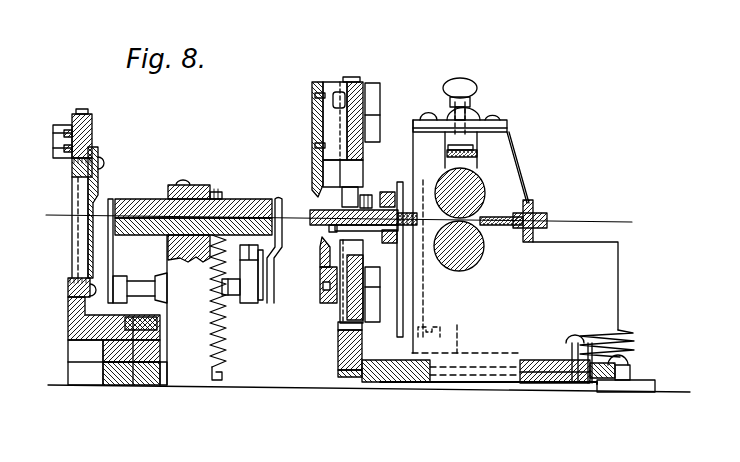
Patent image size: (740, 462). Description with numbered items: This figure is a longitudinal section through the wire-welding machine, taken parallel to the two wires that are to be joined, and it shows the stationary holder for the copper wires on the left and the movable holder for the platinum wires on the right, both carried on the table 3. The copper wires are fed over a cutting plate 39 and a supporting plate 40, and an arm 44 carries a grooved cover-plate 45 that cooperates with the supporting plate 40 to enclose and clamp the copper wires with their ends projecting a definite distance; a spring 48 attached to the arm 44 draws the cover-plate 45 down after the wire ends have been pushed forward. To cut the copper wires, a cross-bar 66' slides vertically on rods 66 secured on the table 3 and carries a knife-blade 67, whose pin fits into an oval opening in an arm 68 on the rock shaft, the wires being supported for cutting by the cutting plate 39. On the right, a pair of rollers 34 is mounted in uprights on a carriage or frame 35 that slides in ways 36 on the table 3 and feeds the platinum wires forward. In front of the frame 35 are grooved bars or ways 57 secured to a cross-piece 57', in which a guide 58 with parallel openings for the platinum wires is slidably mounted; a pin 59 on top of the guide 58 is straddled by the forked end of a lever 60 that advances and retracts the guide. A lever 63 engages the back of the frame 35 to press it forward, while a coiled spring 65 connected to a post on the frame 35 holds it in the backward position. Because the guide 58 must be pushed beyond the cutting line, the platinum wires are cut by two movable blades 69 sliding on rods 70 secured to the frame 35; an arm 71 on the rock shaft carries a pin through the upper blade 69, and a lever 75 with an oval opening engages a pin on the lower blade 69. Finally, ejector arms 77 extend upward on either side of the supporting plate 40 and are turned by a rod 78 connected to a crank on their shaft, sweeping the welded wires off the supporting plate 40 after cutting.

The table 3 is at (318, 386).
The pair of rollers 34 is at (484, 196).
The carriage or frame 35 is at (612, 270).
The ways 36 is at (497, 386).
The cutting plate 39 is at (75, 262).
The supporting plate 40 is at (160, 233).
The arm 44 is at (197, 186).
The cover-plate 45 is at (152, 200).
The spring 48 is at (227, 337).
The grooved bars or ways 57 is at (352, 221).
The cross-piece 57' is at (391, 248).
The guide 58 is at (330, 228).
The pin 59 is at (366, 195).
The lever 60 is at (343, 201).
The lever 63 is at (630, 368).
The coiled spring 65 is at (618, 331).
The rods 66 is at (88, 100).
The cross-bar 66' is at (103, 145).
The knife-blade 67 is at (100, 185).
The arm 68 is at (58, 146).
The movable blades 69 is at (313, 169).
The rods 70 is at (352, 78).
The arm 71 is at (376, 106).
The lever 75 is at (380, 308).
The ejector arms 77 is at (113, 262).
The rod 78 is at (241, 256).